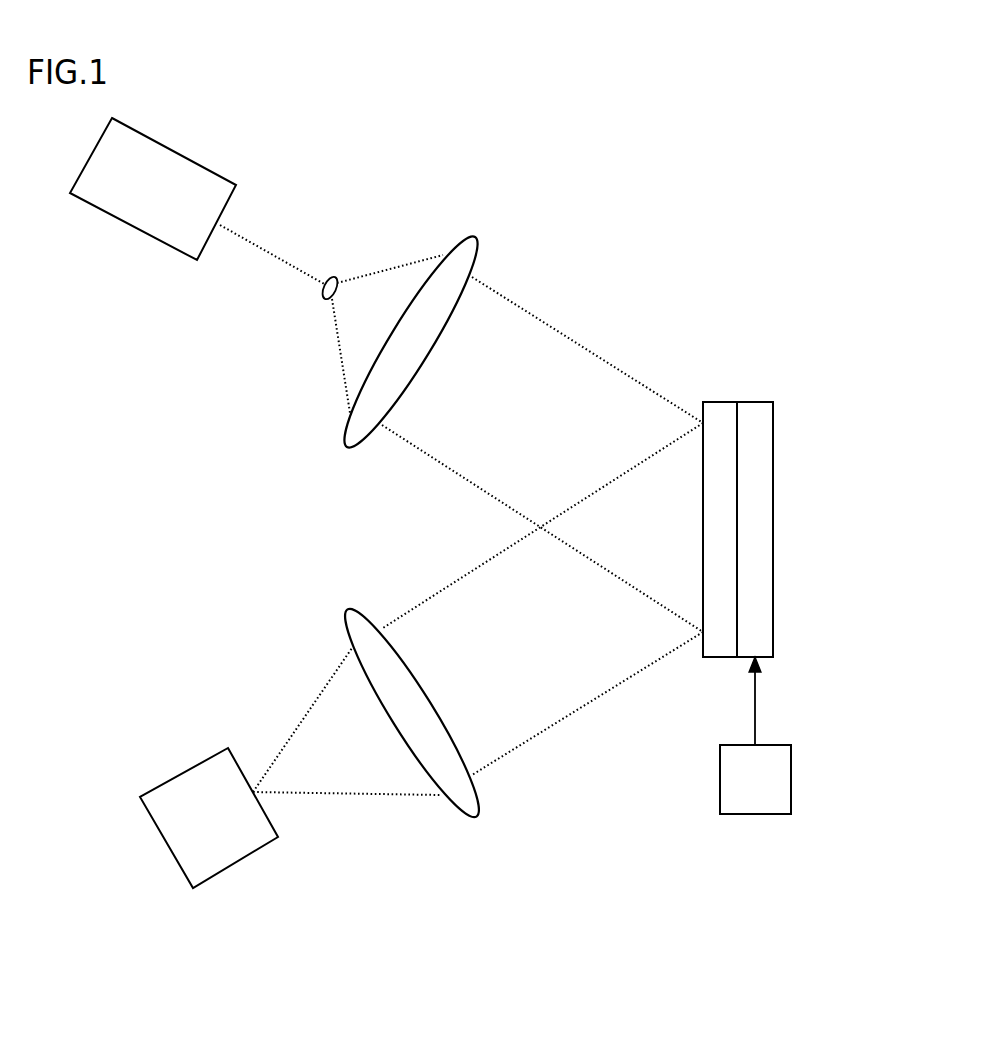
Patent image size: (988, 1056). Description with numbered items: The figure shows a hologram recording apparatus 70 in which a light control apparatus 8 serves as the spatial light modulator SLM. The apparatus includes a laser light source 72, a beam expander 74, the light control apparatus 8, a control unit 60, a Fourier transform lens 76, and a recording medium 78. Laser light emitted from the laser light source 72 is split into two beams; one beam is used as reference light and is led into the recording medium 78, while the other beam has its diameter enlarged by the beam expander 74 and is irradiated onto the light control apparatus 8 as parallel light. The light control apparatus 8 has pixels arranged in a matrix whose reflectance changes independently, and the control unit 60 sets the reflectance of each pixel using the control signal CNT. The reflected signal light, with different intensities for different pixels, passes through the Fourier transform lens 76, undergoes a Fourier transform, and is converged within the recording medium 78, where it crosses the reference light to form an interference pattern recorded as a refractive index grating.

The laser light source 72 is at (200, 167).
The beam expander 74 is at (480, 243).
The light control apparatus 8 is at (792, 396).
The control unit 60 is at (791, 795).
The Fourier transform lens 76 is at (477, 820).
The recording medium 78 is at (225, 872).
The hologram recording apparatus 70 is at (863, 978).